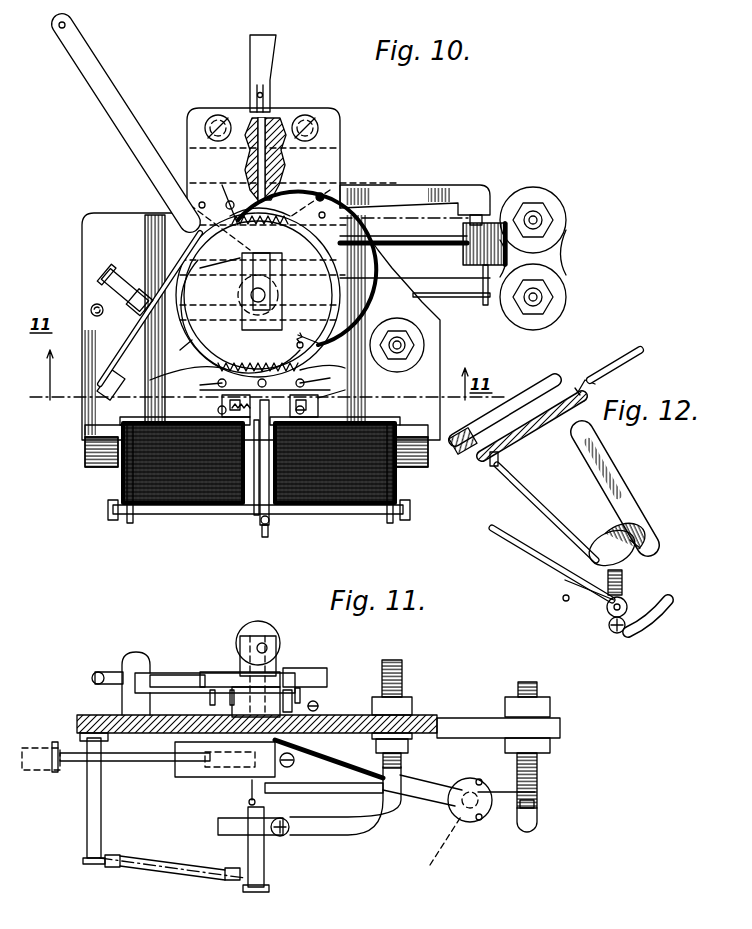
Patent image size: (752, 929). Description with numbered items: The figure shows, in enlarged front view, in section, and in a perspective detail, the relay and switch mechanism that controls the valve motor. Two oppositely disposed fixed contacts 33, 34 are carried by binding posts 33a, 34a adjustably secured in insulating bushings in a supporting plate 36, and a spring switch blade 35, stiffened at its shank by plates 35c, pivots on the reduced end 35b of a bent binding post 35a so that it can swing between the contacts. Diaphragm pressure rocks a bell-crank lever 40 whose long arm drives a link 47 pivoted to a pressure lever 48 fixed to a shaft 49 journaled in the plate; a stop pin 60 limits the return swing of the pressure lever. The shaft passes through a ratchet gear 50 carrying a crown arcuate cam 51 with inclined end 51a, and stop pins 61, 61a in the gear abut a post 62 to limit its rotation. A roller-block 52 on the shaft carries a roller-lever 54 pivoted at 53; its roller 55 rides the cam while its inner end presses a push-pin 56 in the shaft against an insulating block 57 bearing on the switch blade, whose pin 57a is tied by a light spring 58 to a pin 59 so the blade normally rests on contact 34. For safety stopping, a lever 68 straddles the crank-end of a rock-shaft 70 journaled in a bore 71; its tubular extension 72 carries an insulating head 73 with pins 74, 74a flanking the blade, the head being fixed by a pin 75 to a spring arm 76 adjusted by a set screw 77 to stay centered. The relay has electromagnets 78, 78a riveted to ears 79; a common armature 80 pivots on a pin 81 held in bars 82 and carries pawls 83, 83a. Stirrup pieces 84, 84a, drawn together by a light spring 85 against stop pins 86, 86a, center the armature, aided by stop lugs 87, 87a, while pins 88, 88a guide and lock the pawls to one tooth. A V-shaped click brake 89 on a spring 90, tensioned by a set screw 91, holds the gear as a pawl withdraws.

In FIG. 12, the fixed contact 33 is at (632, 595).
In FIG. 11, the fixed contact 33 is at (540, 785).
In FIG. 10, the binding post 33a is at (545, 297).
In FIG. 12, the binding post 33a is at (640, 572).
In FIG. 11, the binding post 33a is at (540, 775).
In FIG. 12, the fixed contact 34 is at (615, 635).
In FIG. 11, the fixed contact 34 is at (536, 806).
In FIG. 10, the binding post 34a is at (545, 220).
In FIG. 12, the binding post 34a is at (665, 620).
In FIG. 11, the binding post 34a is at (538, 792).
In FIG. 10, the spring switch blade 35 is at (445, 290).
In FIG. 12, the spring switch blade 35 is at (540, 560).
In FIG. 11, the spring switch blade 35 is at (445, 795).
In FIG. 10, the binding post 35a is at (408, 344).
In FIG. 11, the binding post 35a is at (405, 680).
In FIG. 11, the reduced end 35b is at (285, 836).
In FIG. 11, the stiffening plates 35c is at (225, 832).
In FIG. 10, the supporting plate 36 is at (325, 165).
In FIG. 12, the supporting plate 36 is at (525, 400).
In FIG. 11, the supporting plate 36 is at (458, 715).
In FIG. 11, the bell-crank lever 40 is at (32, 745).
In FIG. 10, the link 47 is at (118, 115).
In FIG. 11, the link 47 is at (128, 762).
In FIG. 10, the pressure lever 48 is at (240, 288).
In FIG. 11, the pressure lever 48 is at (225, 770).
In FIG. 10, the shaft 49 is at (250, 340).
In FIG. 11, the shaft 49 is at (240, 700).
In FIG. 10, the ratchet gear 50 is at (166, 353).
In FIG. 11, the ratchet gear 50 is at (195, 670).
In FIG. 10, the crown arcuate cam 51 is at (325, 322).
In FIG. 11, the crown arcuate cam 51 is at (300, 665).
In FIG. 10, the inclined end 51a is at (225, 212).
In FIG. 11, the inclined end 51a is at (205, 672).
In FIG. 10, the roller-block 52 is at (300, 331).
In FIG. 11, the roller-block 52 is at (235, 672).
In FIG. 10, the pivot 53 is at (283, 277).
In FIG. 11, the pivot 53 is at (280, 640).
In FIG. 10, the roller-lever 54 is at (308, 268).
In FIG. 11, the roller-lever 54 is at (262, 640).
In FIG. 10, the roller 55 is at (226, 197).
In FIG. 11, the roller 55 is at (255, 620).
In FIG. 11, the push-pin 56 is at (270, 648).
In FIG. 11, the insulating block 57 is at (230, 805).
In FIG. 11, the pin 57a is at (268, 880).
In FIG. 11, the light spring 58 is at (175, 872).
In FIG. 10, the pin 59 is at (92, 307).
In FIG. 11, the pin 59 is at (90, 805).
In FIG. 11, the stop pin 60 is at (200, 770).
In FIG. 10, the stop pin 61 is at (320, 352).
In FIG. 11, the stop pin 61 is at (295, 700).
In FIG. 10, the stop pin 61a is at (220, 265).
In FIG. 11, the stop pin 61a is at (230, 695).
In FIG. 10, the post 62 is at (340, 203).
In FIG. 11, the post 62 is at (300, 688).
In FIG. 10, the lever 68 is at (262, 58).
In FIG. 12, the lever 68 is at (632, 352).
In FIG. 10, the rock-shaft 70 is at (262, 107).
In FIG. 12, the rock-shaft 70 is at (588, 370).
In FIG. 10, the bore 71 is at (285, 176).
In FIG. 12, the bore 71 is at (530, 425).
In FIG. 10, the tubular extension 72 is at (390, 240).
In FIG. 12, the tubular extension 72 is at (548, 520).
In FIG. 11, the tubular extension 72 is at (330, 792).
In FIG. 10, the head 73 is at (480, 245).
In FIG. 12, the head 73 is at (608, 530).
In FIG. 11, the head 73 is at (485, 818).
In FIG. 12, the pin 74 is at (585, 598).
In FIG. 11, the pin 74 is at (478, 822).
In FIG. 10, the pin 74a is at (509, 308).
In FIG. 12, the pin 74a is at (565, 602).
In FIG. 11, the pin 74a is at (490, 765).
In FIG. 10, the pin 75 is at (476, 213).
In FIG. 12, the pin 75 is at (650, 548).
In FIG. 11, the pin 75 is at (441, 849).
In FIG. 10, the spring arm 76 is at (415, 195).
In FIG. 12, the spring arm 76 is at (628, 488).
In FIG. 11, the spring arm 76 is at (340, 765).
In FIG. 10, the set screw 77 is at (322, 195).
In FIG. 11, the set screw 77 is at (320, 708).
In FIG. 10, the electromagnet 78 is at (350, 505).
In FIG. 10, the electromagnet 78a is at (180, 505).
In FIG. 10, the ears 79 is at (90, 455).
In FIG. 10, the armature 80 is at (258, 460).
In FIG. 10, the pin 81 is at (270, 505).
In FIG. 10, the bars 82 is at (147, 512).
In FIG. 10, the pawl 83 is at (314, 377).
In FIG. 10, the pawl 83a is at (203, 378).
In FIG. 10, the stirrup piece 84 is at (330, 407).
In FIG. 10, the stirrup piece 84a is at (222, 405).
In FIG. 10, the light spring 85 is at (265, 378).
In FIG. 10, the stop pins 86 is at (290, 395).
In FIG. 10, the stop pins 86a is at (210, 401).
In FIG. 10, the stop lug 87 is at (268, 515).
In FIG. 10, the stop lug 87a is at (255, 470).
In FIG. 10, the pin 88 is at (255, 366).
In FIG. 10, the pin 88a is at (128, 384).
In FIG. 10, the click brake 89 is at (190, 240).
In FIG. 10, the spring 90 is at (148, 332).
In FIG. 11, the spring 90 is at (155, 672).
In FIG. 10, the set screw 91 is at (128, 285).
In FIG. 11, the set screw 91 is at (108, 670).